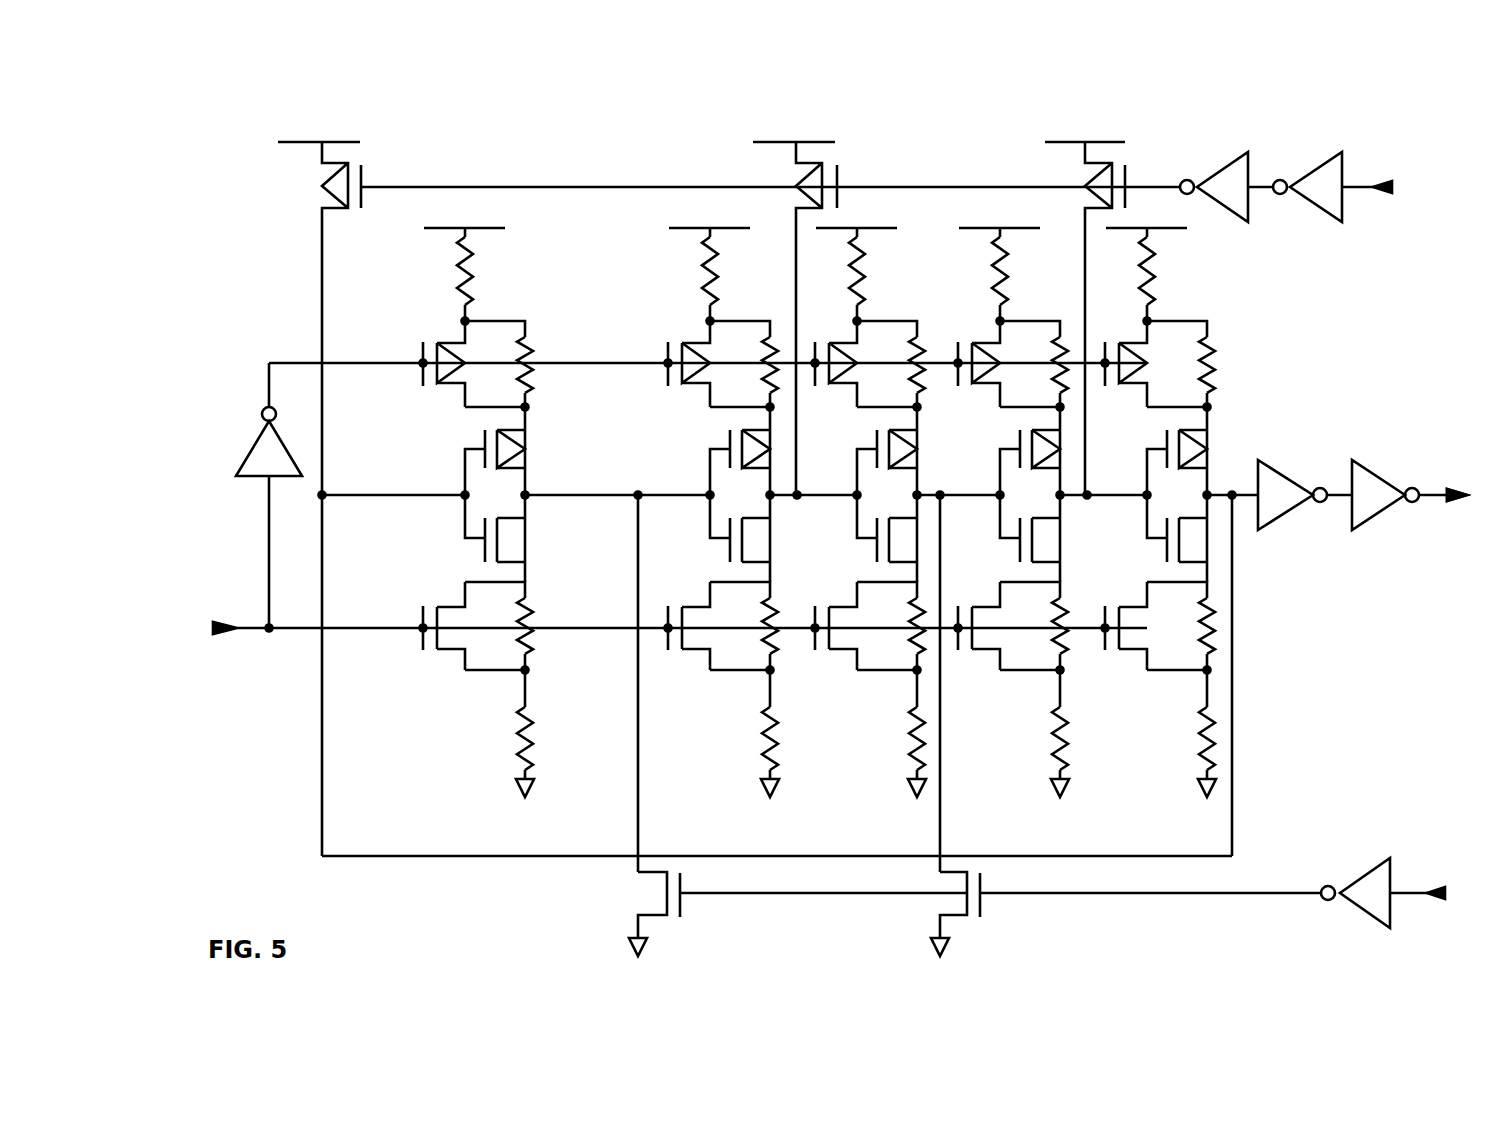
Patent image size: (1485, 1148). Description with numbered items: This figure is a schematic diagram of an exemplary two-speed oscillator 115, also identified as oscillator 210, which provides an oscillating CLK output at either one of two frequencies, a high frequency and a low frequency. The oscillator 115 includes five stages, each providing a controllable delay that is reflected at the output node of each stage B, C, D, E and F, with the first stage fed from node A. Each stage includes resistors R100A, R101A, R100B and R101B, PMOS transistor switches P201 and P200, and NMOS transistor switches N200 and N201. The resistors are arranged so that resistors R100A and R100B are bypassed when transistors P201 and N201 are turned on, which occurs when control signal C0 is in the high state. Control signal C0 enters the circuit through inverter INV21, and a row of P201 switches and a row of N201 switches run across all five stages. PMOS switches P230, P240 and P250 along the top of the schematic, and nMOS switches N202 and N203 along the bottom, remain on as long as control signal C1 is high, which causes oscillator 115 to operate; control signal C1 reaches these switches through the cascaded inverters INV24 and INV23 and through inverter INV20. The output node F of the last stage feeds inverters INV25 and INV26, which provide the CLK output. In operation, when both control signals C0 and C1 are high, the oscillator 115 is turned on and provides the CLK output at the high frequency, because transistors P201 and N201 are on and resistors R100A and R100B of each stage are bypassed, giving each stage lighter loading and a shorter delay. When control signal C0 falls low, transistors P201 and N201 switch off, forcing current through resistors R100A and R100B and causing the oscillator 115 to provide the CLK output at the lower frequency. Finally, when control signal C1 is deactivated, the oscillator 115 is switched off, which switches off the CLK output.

The oscillator 210 is at (823, 511).
The two-speed oscillator 115 is at (545, 152).
The PMOS switch P230 is at (302, 499).
The PMOS switch P240 is at (778, 318).
The PMOS switch P250 is at (1067, 318).
The PMOS transistor switch P201 is at (411, 364).
The PMOS transistor switch P200 is at (530, 484).
The NMOS transistor switch N200 is at (542, 540).
The NMOS transistor switch N201 is at (411, 626).
The nMOS switch N202 is at (764, 914).
The nMOS switch N203 is at (1093, 909).
The resistor R101A is at (495, 276).
The resistor R100A is at (544, 366).
The resistor R100B is at (544, 628).
The resistor R101B is at (571, 733).
The inverter INV20 is at (1381, 908).
The inverter INV21 is at (233, 497).
The inverter INV23 is at (1223, 171).
The inverter INV24 is at (1330, 171).
The inverter INV25 is at (1301, 480).
The inverter INV26 is at (1405, 480).
The control signal C0 is at (206, 629).
The control signal C1 is at (1427, 541).
The CLK output CLK is at (1381, 552).
The node A is at (346, 477).
The output node B is at (660, 476).
The output node C is at (820, 476).
The output node D is at (962, 476).
The output node E is at (1101, 477).
The output node F is at (1241, 477).